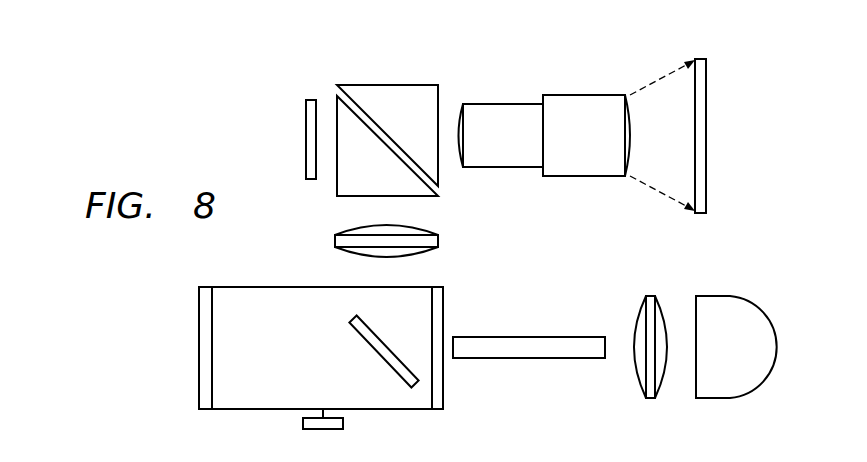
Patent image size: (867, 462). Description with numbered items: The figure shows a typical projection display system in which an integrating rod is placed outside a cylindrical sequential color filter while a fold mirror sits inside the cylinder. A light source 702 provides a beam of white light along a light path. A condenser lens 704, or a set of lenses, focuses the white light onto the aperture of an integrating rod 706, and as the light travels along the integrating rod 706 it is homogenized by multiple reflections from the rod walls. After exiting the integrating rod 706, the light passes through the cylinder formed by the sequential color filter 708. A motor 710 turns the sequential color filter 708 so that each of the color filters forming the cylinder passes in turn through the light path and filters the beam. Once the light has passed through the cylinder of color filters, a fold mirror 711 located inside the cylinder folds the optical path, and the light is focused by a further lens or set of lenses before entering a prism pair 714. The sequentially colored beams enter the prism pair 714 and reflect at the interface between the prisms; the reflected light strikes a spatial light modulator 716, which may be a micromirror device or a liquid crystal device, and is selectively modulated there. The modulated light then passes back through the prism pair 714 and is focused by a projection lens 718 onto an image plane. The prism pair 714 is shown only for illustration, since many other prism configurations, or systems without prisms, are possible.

The light source 702 is at (720, 398).
The condenser lens 704 is at (650, 398).
The integrating rod 706 is at (530, 358).
The sequential color filter 708 is at (199, 346).
The motor 710 is at (303, 421).
The fold mirror 711 is at (378, 354).
The prism pair 714 is at (387, 90).
The spatial light modulator 716 is at (306, 140).
The projection lens 718 is at (583, 95).